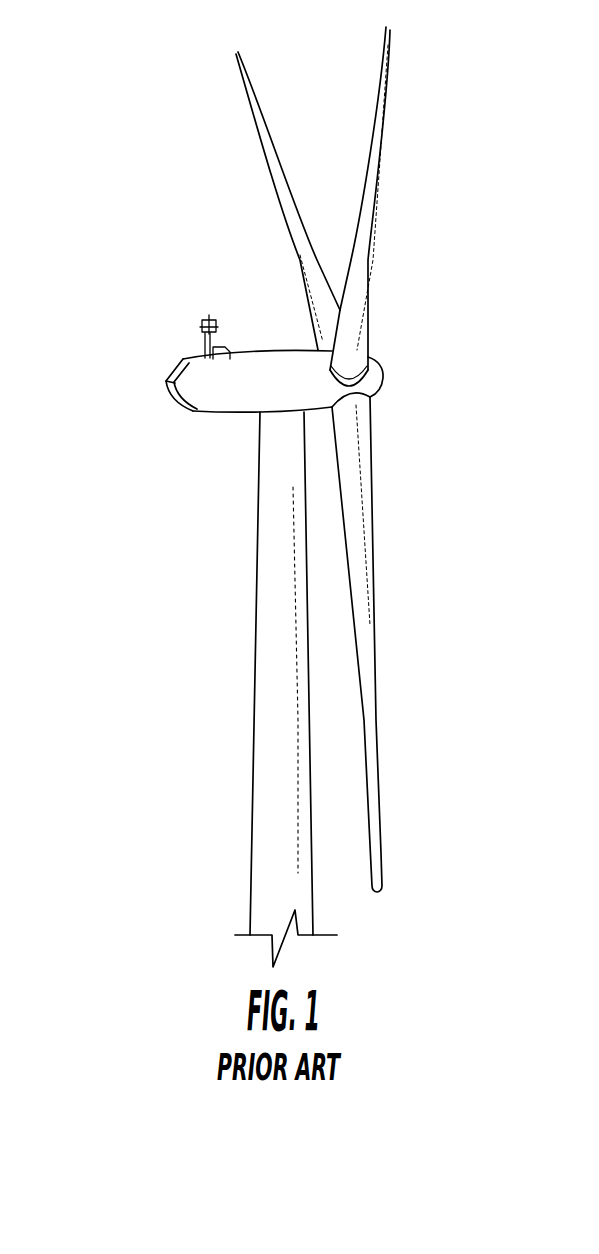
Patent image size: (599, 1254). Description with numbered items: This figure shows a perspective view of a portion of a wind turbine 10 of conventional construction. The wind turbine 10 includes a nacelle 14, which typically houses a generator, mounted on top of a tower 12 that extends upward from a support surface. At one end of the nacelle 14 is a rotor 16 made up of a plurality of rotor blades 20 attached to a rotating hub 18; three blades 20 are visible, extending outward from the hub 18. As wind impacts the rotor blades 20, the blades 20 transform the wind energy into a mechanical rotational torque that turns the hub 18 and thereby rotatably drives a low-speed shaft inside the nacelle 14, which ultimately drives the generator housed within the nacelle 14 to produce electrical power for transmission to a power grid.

The wind turbine 10 is at (132, 141).
The tower 12 is at (257, 731).
The nacelle 14 is at (220, 425).
The rotor 16 is at (410, 375).
The rotating hub 18 is at (384, 388).
The rotor blades 20 is at (291, 180).